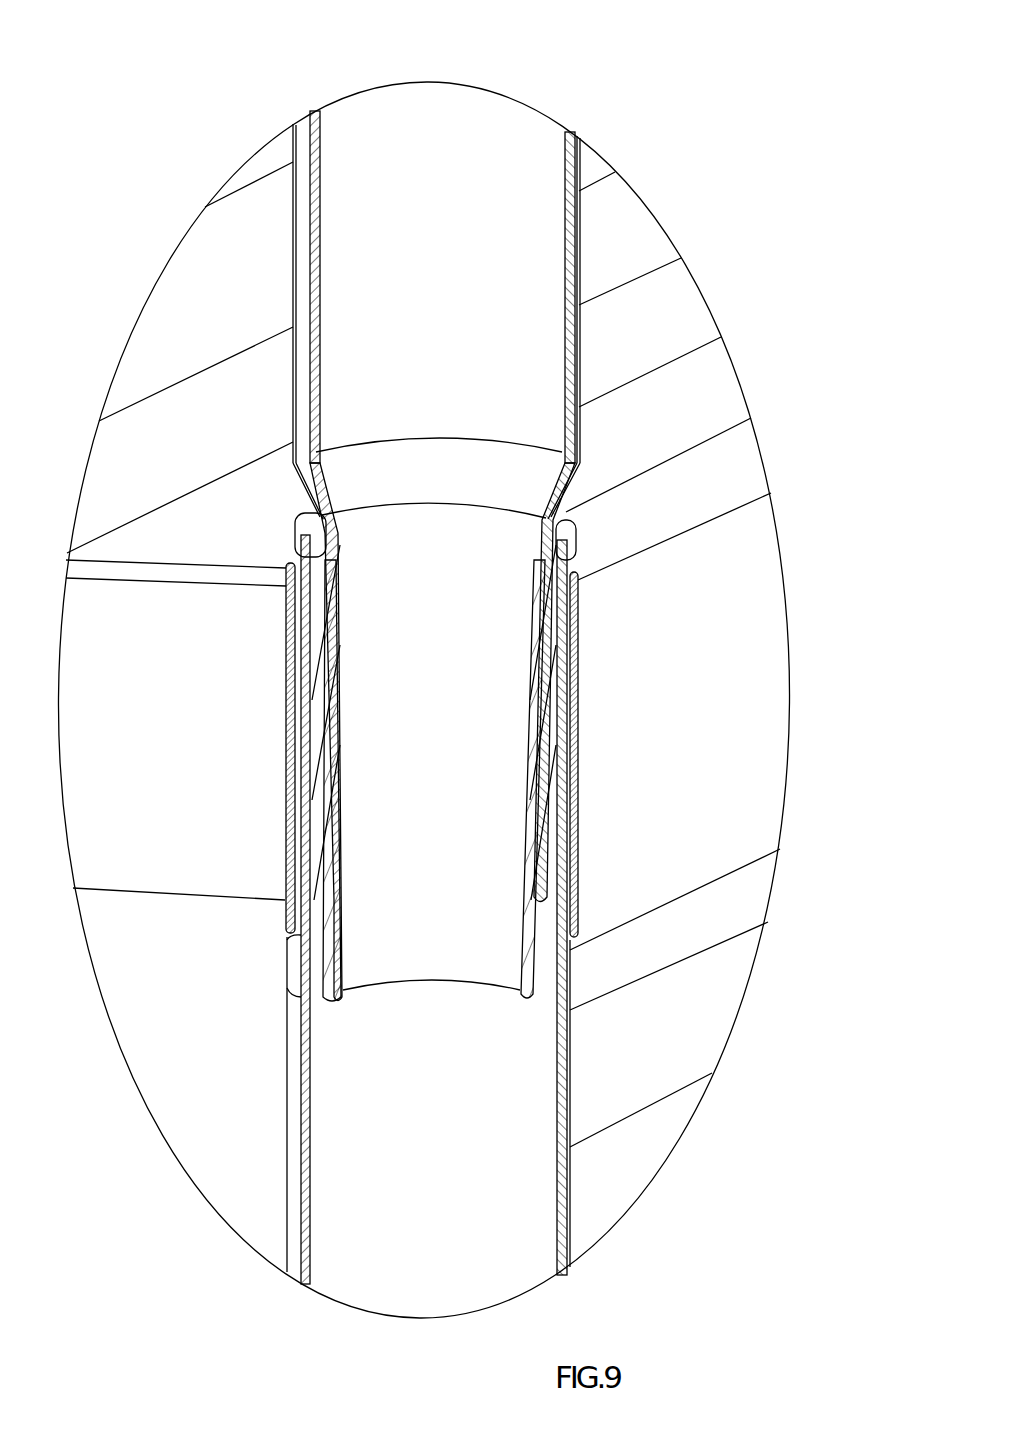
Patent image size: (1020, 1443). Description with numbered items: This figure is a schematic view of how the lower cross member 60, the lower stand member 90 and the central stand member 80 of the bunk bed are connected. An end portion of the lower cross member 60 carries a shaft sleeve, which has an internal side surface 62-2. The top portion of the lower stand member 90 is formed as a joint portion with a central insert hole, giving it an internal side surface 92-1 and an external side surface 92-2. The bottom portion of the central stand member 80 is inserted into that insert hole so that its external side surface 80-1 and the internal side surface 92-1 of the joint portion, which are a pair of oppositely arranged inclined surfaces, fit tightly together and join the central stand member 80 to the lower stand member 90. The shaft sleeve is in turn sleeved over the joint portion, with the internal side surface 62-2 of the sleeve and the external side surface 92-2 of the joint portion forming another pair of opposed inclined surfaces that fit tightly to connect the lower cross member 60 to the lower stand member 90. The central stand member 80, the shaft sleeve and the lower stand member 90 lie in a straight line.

The central stand member 80 is at (495, 157).
The external side surface of the bottom portion of the central stand member 80-1 is at (578, 622).
The internal side surface of the joint portion 92-1 is at (578, 692).
The external side surface of the joint portion 92-2 is at (578, 803).
The internal side surface of the shaft sleeve 62-2 is at (578, 860).
The lower cross member 60 is at (142, 832).
The lower stand member 90 is at (488, 1227).